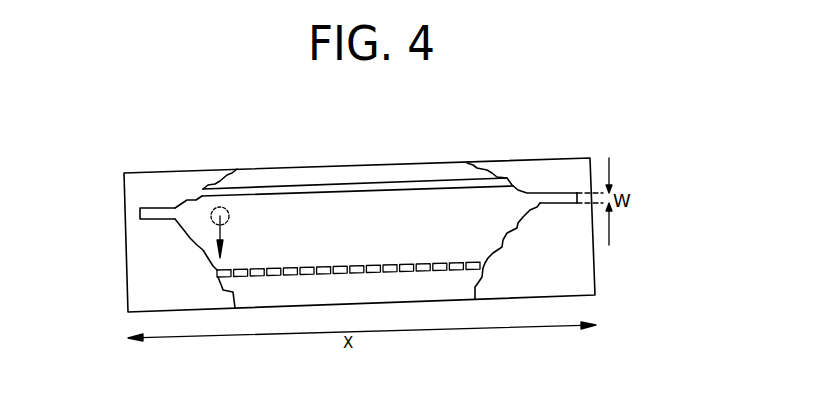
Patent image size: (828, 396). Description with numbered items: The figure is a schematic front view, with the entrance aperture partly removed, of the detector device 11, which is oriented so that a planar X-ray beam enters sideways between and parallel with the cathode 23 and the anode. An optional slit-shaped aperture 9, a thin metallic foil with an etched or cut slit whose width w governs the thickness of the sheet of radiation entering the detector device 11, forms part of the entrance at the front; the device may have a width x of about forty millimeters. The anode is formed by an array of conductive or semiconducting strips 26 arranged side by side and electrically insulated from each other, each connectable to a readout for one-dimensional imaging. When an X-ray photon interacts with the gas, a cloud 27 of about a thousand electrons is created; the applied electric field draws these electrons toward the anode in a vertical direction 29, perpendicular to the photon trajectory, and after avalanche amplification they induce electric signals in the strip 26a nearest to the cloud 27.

The slit-shaped aperture 9 is at (511, 168).
The detector device 11 is at (142, 136).
The cathode 23 is at (367, 192).
The anode/readout strips 26 is at (380, 263).
The strip nearest to the cloud 26a is at (232, 268).
The cloud 27 is at (230, 212).
The direction 29 is at (222, 231).